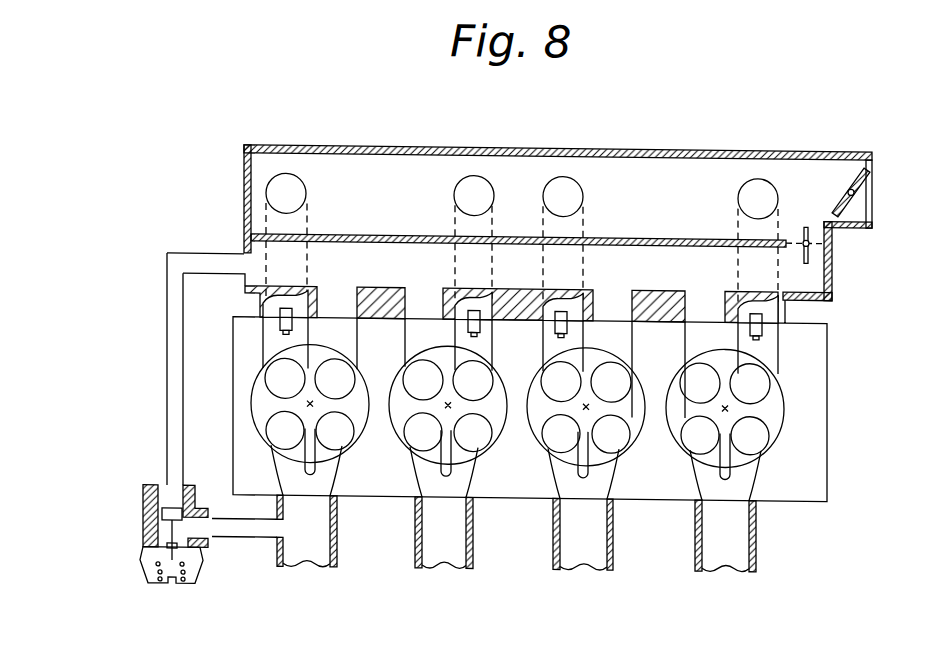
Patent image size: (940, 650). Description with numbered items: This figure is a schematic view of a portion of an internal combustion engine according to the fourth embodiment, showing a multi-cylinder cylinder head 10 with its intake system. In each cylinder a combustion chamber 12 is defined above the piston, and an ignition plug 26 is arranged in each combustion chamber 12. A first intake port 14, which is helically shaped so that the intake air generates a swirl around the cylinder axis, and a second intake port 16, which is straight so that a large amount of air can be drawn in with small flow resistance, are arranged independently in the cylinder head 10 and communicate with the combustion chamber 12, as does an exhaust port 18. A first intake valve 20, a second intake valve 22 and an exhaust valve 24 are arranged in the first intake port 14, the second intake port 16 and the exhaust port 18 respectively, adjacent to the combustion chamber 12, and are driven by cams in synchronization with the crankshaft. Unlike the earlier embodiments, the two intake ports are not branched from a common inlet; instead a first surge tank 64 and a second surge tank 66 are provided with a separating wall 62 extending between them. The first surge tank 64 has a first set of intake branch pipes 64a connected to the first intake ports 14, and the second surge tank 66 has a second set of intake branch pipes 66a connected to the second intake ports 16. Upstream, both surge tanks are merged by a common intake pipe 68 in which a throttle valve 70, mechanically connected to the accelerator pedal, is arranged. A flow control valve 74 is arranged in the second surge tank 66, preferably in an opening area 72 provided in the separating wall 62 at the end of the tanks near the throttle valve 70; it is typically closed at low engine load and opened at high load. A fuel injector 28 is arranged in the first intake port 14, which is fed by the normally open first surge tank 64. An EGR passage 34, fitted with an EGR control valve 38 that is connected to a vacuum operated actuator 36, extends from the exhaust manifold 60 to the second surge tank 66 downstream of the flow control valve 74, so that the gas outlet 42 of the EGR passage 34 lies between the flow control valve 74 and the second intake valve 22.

The cylinder head 10 is at (813, 422).
The combustion chamber 12 is at (355, 419).
The first intake port 14 is at (267, 330).
The second intake port 16 is at (350, 338).
The exhaust port 18 is at (702, 464).
The first intake valve 20 is at (273, 377).
The second intake valve 22 is at (347, 373).
The exhaust valve 24 is at (412, 450).
The ignition plug 26 is at (522, 400).
The fuel injector 28 is at (778, 306).
The EGR passage 34 is at (163, 355).
The vacuum operated actuator 36 is at (138, 568).
The EGR control valve 38 is at (143, 494).
The gas outlet 42 is at (247, 259).
The exhaust manifold 60 is at (340, 534).
The separating wall 62 is at (372, 229).
The first surge tank 64 is at (357, 158).
The first set of intake branch pipes 64a is at (748, 216).
The second surge tank 66 is at (425, 245).
The second set of intake branch pipes 66a is at (700, 295).
The common intake pipe 68 is at (833, 145).
The throttle valve 70 is at (877, 177).
The opening area 72 is at (817, 227).
The flow control valve 74 is at (813, 250).